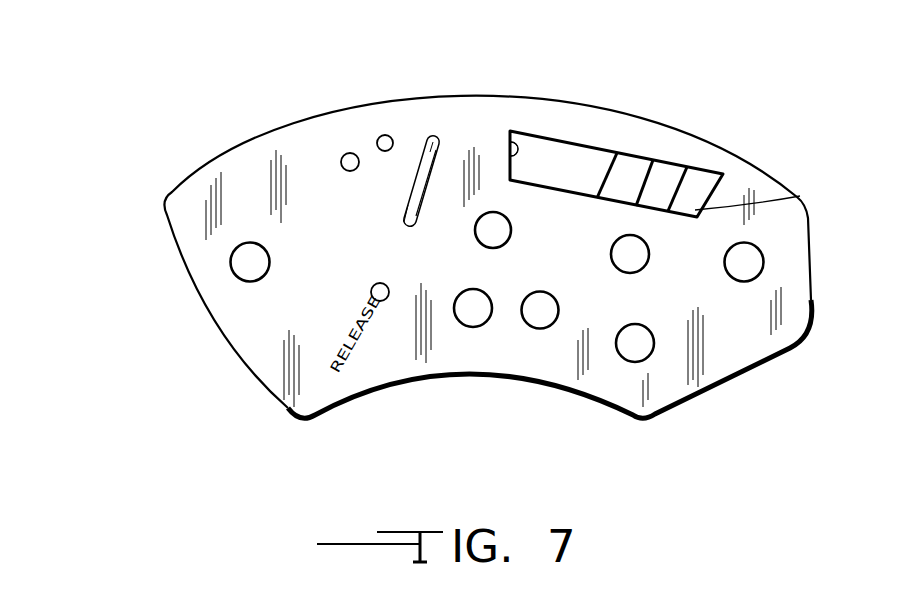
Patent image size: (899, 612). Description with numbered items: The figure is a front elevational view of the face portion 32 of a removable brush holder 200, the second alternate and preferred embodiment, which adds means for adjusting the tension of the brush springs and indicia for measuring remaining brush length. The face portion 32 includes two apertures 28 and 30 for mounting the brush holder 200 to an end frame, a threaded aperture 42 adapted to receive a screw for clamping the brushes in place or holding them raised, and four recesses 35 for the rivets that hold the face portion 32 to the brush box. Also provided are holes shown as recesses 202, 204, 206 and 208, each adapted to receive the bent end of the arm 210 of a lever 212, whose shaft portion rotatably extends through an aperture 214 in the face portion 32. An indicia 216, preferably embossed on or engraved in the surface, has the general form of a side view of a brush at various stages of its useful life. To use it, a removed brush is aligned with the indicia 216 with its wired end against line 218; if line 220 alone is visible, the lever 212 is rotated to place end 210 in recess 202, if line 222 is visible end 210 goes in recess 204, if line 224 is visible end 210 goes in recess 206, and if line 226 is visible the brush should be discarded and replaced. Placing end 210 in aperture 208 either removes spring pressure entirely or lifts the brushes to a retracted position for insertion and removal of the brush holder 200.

The aperture 28 is at (231, 263).
The aperture 30 is at (764, 267).
The face portion 32 is at (257, 156).
The recesses 35 is at (476, 240).
The threaded aperture 42 is at (527, 330).
The brush holder 200 is at (665, 172).
The recess 202 is at (353, 152).
The recess 204 is at (393, 136).
The recess 206 is at (440, 131).
The aperture 208 is at (372, 287).
The arm 210 is at (510, 160).
The lever 212 is at (424, 178).
The aperture 214 is at (403, 221).
The indicia 216 is at (631, 134).
The line 218 is at (505, 101).
The line 220 is at (720, 187).
The line 222 is at (802, 196).
The line 224 is at (650, 180).
The line 226 is at (612, 163).